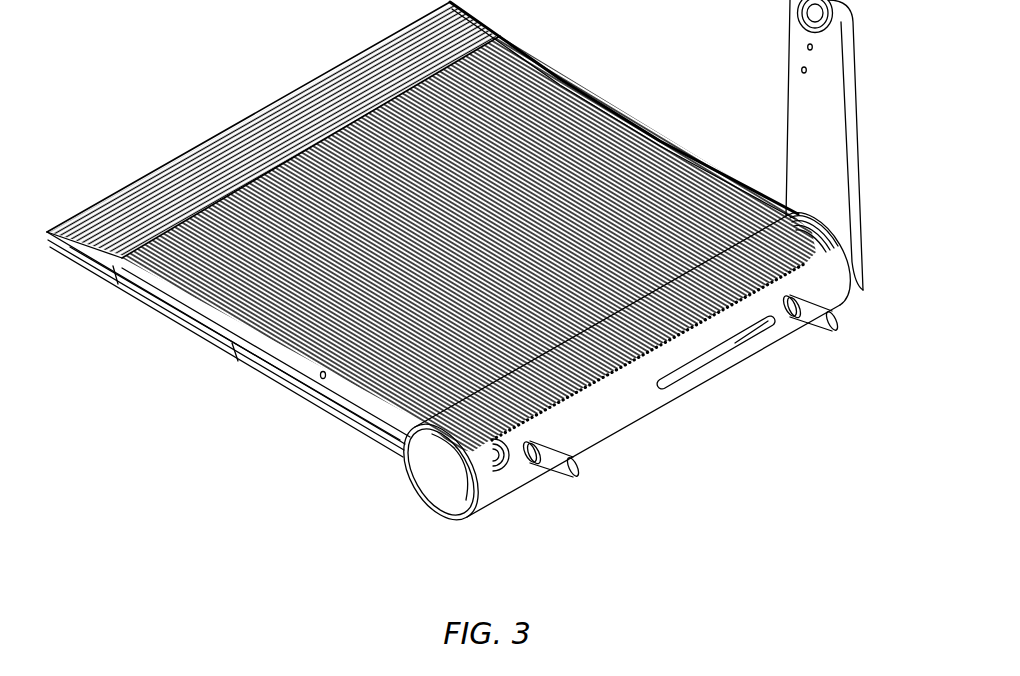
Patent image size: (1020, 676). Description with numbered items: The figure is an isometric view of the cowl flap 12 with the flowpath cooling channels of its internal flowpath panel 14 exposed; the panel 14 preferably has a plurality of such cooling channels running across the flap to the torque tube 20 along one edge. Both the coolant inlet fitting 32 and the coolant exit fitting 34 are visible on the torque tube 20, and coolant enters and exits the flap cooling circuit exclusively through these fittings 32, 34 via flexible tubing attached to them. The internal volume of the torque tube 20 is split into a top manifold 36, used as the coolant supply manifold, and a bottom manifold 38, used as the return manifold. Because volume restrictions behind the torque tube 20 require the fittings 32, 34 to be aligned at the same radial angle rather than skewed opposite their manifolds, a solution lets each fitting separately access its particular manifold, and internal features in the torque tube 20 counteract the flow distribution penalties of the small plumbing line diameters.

The cowl flap 12 is at (442, 236).
The internal flowpath panel 14 is at (598, 122).
The torque tube 20 is at (594, 392).
The coolant inlet fitting 32 is at (590, 476).
The coolant exit fitting 34 is at (848, 326).
The top manifold 36 is at (437, 452).
The bottom manifold 38 is at (458, 476).